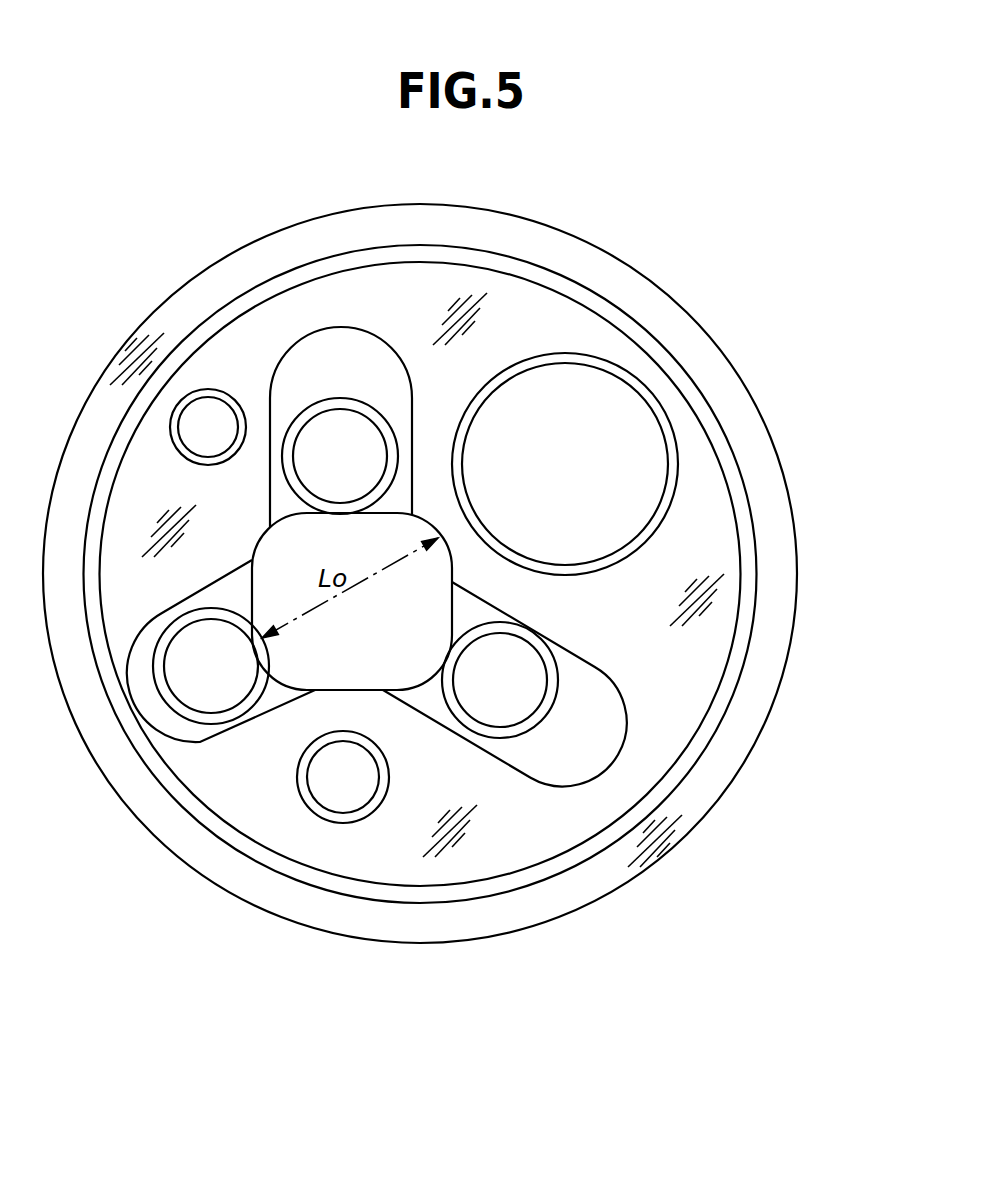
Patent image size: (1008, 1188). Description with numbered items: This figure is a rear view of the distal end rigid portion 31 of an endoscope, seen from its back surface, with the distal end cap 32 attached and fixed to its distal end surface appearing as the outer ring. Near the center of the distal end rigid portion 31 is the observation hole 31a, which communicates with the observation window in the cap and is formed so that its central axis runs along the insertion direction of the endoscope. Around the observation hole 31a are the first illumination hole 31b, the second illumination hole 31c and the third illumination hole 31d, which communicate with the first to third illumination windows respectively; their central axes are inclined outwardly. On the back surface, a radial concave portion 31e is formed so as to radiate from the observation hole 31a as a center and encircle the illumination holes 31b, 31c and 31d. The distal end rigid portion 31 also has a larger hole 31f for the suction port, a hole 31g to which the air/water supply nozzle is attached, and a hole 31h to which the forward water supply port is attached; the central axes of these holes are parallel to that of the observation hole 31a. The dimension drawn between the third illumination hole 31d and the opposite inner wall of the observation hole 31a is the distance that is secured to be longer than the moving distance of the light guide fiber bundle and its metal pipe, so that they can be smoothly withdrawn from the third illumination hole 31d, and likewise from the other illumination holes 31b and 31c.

The distal end rigid portion 31 is at (732, 695).
The distal end cap 32 is at (797, 575).
The observation hole 31a is at (402, 650).
The first illumination hole 31b is at (367, 468).
The second illumination hole 31c is at (528, 697).
The third illumination hole 31d is at (242, 683).
The radial concave portion 31e is at (480, 607).
The hole for suction port 31f is at (593, 480).
The hole for air/water supply nozzle 31g is at (338, 775).
The hole for forward water supply port 31h is at (207, 427).